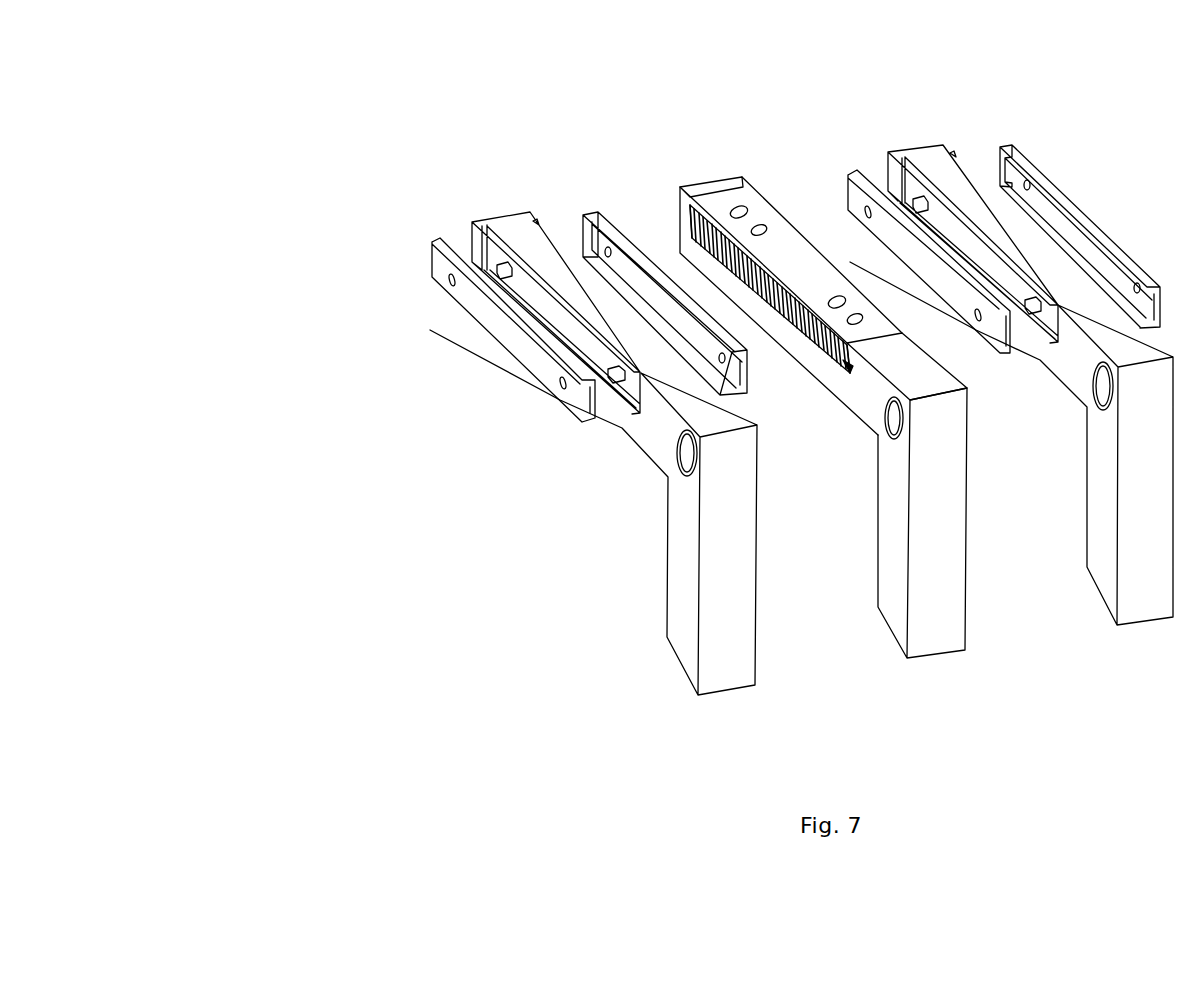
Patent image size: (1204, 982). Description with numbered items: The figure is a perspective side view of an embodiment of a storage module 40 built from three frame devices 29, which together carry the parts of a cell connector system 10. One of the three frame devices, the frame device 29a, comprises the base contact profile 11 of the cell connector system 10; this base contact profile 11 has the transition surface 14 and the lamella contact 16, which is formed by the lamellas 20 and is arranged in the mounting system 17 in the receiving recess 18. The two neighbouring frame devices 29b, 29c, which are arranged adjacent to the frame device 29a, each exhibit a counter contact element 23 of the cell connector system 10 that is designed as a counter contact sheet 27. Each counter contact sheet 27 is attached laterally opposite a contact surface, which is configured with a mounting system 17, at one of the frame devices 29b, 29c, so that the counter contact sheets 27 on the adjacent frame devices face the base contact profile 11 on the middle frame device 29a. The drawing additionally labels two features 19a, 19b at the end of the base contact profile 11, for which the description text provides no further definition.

The cell connector system 10 is at (666, 364).
The storage module 40 is at (368, 277).
The base contact profile 11 is at (707, 291).
The transition surface 14 is at (770, 234).
The lamella contact 16 is at (773, 365).
The lamellas 20 is at (825, 357).
The mounting system 17 is at (955, 429).
The receiving recess 18 is at (857, 378).
The upper guide edge 19a is at (703, 187).
The lower guide edge 19b is at (680, 230).
The counter contact element 23 is at (742, 227).
The counter contact sheet 27 is at (587, 238).
The frame devices 29 is at (955, 495).
The frame device 29a is at (946, 556).
The frame device 29b is at (757, 580).
The frame device 29c is at (1172, 508).